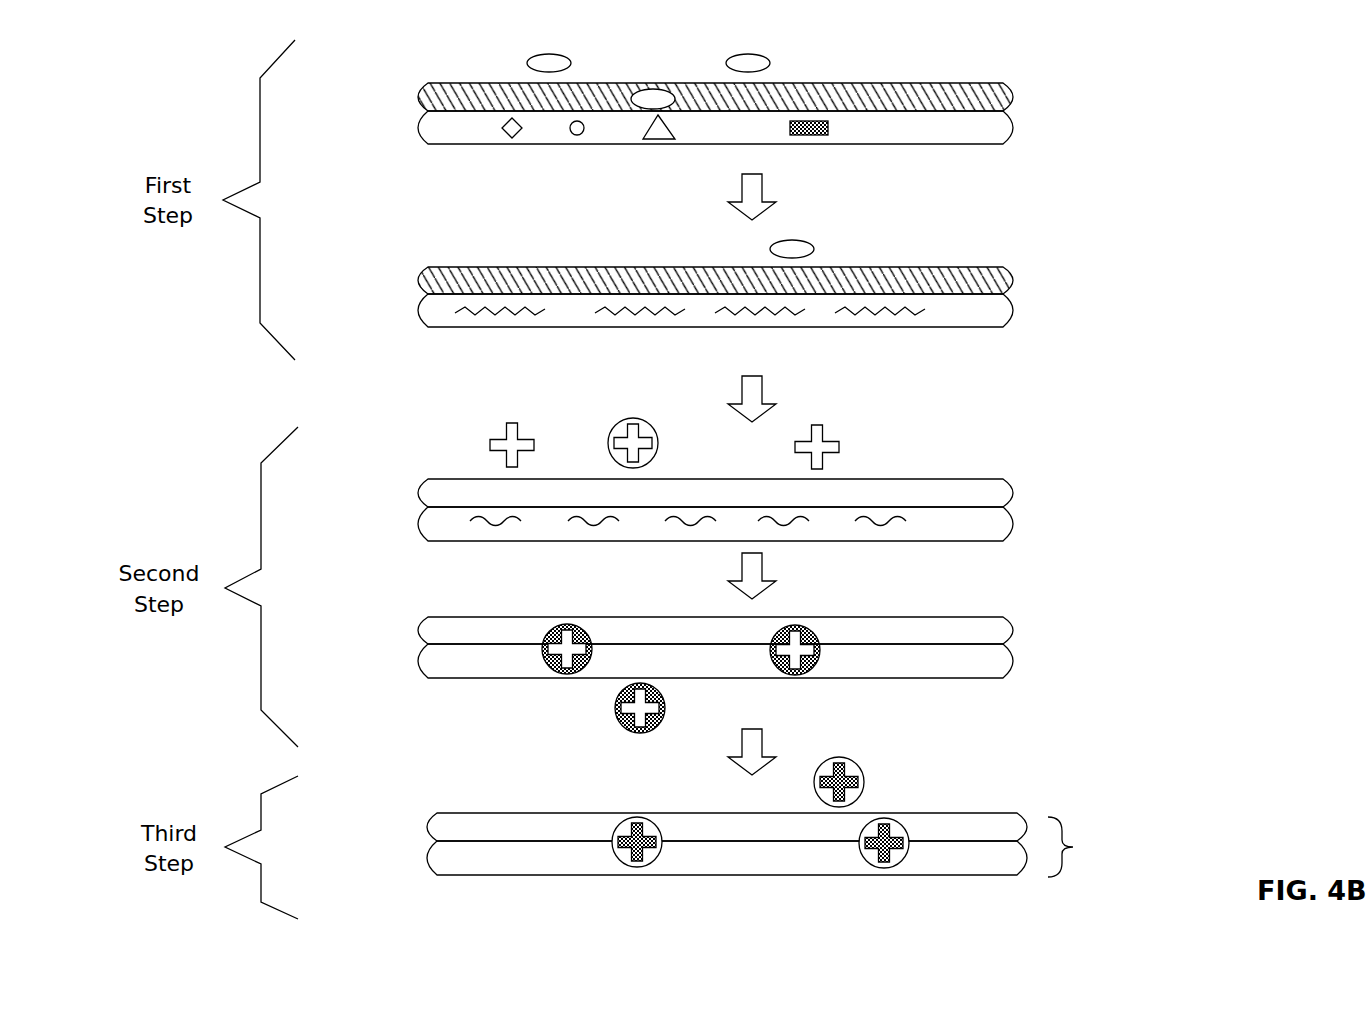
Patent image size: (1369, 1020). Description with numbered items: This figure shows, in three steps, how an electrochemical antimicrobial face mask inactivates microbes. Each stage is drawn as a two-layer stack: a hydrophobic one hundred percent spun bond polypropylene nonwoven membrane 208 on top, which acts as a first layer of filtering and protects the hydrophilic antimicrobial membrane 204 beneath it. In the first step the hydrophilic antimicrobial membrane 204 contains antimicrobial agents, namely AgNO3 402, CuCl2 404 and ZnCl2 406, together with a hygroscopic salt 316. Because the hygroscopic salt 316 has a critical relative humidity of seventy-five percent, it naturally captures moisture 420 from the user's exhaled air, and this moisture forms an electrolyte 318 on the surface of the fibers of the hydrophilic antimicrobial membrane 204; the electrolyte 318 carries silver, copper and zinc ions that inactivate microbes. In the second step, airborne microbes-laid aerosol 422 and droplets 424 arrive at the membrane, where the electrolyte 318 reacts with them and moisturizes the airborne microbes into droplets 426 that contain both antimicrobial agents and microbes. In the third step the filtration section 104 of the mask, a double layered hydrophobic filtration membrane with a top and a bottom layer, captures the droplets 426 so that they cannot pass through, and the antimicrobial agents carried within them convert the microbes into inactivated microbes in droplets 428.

The filtration section 104 is at (1100, 847).
The hydrophilic antimicrobial membrane 204 is at (1073, 665).
The hydrophobic 100% spun bond polypropylene nonwoven membrane 208 is at (1073, 630).
The hygroscopic salt 316 is at (816, 136).
The electrolyte 318 is at (913, 570).
The AgNO3 402 is at (519, 139).
The CuCl2 404 is at (582, 136).
The ZnCl2 406 is at (667, 140).
The moisture 420 is at (858, 229).
The microbes-laid aerosol 422 is at (822, 438).
The droplets 424 is at (702, 407).
The droplets 426 is at (817, 665).
The inactivated microbes in droplets 428 is at (903, 830).